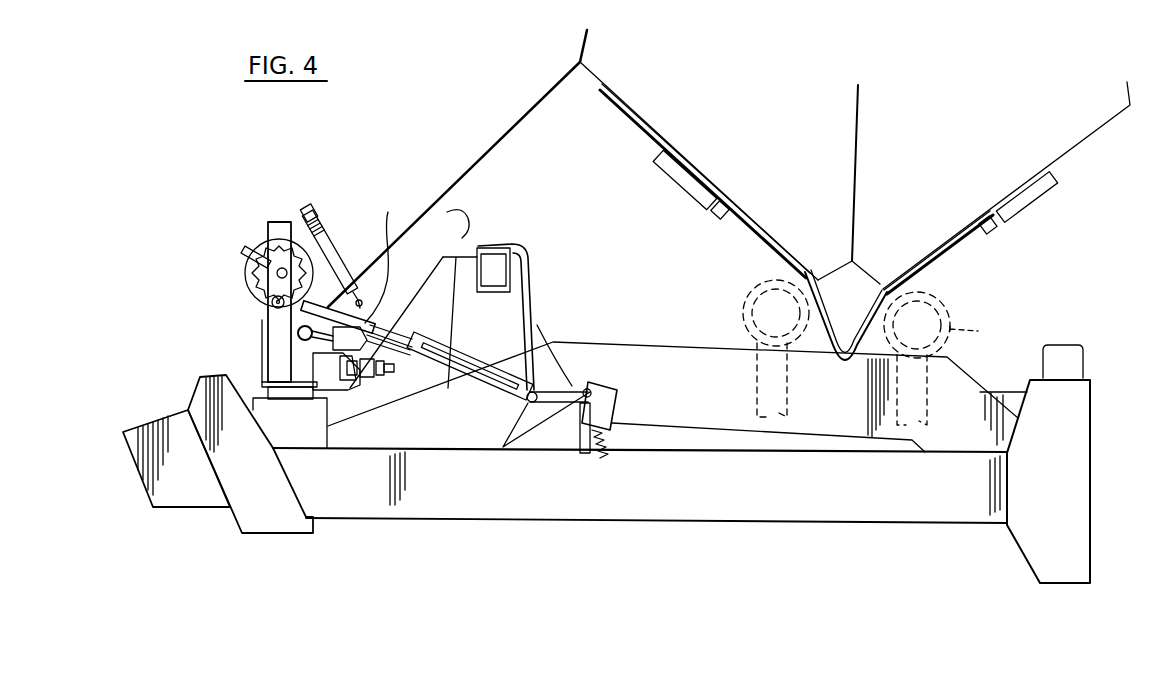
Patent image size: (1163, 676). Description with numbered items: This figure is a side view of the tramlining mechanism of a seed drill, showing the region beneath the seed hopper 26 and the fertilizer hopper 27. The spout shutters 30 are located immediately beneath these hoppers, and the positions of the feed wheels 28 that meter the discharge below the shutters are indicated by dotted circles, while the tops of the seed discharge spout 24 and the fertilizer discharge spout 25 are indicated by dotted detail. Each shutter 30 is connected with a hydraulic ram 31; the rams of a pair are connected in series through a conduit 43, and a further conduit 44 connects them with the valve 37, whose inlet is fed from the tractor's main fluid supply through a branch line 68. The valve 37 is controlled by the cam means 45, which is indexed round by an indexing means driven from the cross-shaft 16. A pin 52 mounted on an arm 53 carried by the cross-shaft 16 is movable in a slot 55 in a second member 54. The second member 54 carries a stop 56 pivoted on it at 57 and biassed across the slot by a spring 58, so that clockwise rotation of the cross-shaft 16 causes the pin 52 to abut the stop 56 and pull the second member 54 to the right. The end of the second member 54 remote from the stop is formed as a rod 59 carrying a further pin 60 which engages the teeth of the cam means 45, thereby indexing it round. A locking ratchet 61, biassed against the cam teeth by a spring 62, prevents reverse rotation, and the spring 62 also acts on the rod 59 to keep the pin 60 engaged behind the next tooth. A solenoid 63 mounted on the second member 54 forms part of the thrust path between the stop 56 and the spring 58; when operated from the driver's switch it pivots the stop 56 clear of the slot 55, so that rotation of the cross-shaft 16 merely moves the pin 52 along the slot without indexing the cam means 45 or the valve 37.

The cross-shaft 16 is at (500, 272).
The seed discharge spout 24 is at (755, 378).
The fertilizer discharge spout 25 is at (982, 330).
The seed hopper 26 is at (790, 128).
The fertilizer hopper 27 is at (983, 128).
The feed wheel 28 is at (745, 314).
The spout shutter 30 is at (772, 232).
The hydraulic ram 31 is at (672, 194).
The valve 37 is at (292, 340).
The conduit 43 is at (828, 342).
The conduit 44 is at (518, 128).
The cam means 45 is at (240, 261).
The pin 52 is at (528, 405).
The arm 53 is at (535, 333).
The second member 54 is at (487, 386).
The slot 55 is at (458, 372).
The stop 56 is at (573, 387).
The pivot 57 is at (592, 388).
The spring 58 is at (605, 450).
The rod 59 is at (389, 255).
The further pin 60 is at (272, 302).
The locking ratchet 61 is at (296, 206).
The spring 62 is at (338, 215).
The solenoid 63 is at (616, 404).
The branch line 68 is at (400, 376).